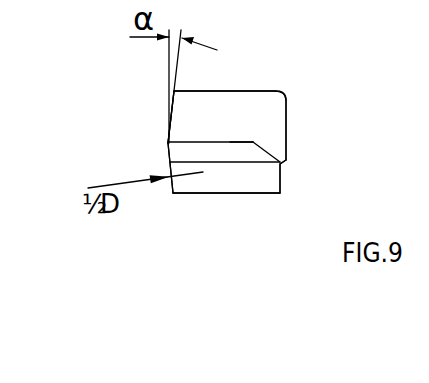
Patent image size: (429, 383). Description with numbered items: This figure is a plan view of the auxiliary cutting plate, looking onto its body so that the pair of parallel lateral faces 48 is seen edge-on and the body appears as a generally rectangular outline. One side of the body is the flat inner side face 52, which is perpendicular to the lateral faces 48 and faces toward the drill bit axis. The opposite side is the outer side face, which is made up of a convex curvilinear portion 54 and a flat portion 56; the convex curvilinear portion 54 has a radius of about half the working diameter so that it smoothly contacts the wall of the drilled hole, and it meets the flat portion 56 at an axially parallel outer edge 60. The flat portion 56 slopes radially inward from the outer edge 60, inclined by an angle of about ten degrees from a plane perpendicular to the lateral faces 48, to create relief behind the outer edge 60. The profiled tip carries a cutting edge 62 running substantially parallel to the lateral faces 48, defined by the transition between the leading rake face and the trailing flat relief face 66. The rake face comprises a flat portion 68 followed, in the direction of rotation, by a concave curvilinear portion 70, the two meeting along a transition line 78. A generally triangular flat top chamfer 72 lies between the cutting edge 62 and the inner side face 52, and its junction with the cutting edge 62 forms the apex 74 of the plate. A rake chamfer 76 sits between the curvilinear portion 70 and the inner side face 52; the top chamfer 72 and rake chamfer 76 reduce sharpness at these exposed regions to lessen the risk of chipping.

The lateral faces 48 is at (253, 90).
The inner side face 52 is at (287, 147).
The convex curvilinear portion 54 is at (168, 162).
The flat portion 56 is at (170, 107).
The outer edge 60 is at (168, 142).
The cutting edge 62 is at (236, 141).
The relief face 66 is at (215, 112).
The flat portion 68 is at (276, 158).
The concave curvilinear portion 70 is at (197, 183).
The top chamfer 72 is at (262, 120).
The apex 74 is at (253, 142).
The rake chamfer 76 is at (287, 168).
The transition line 78 is at (218, 162).